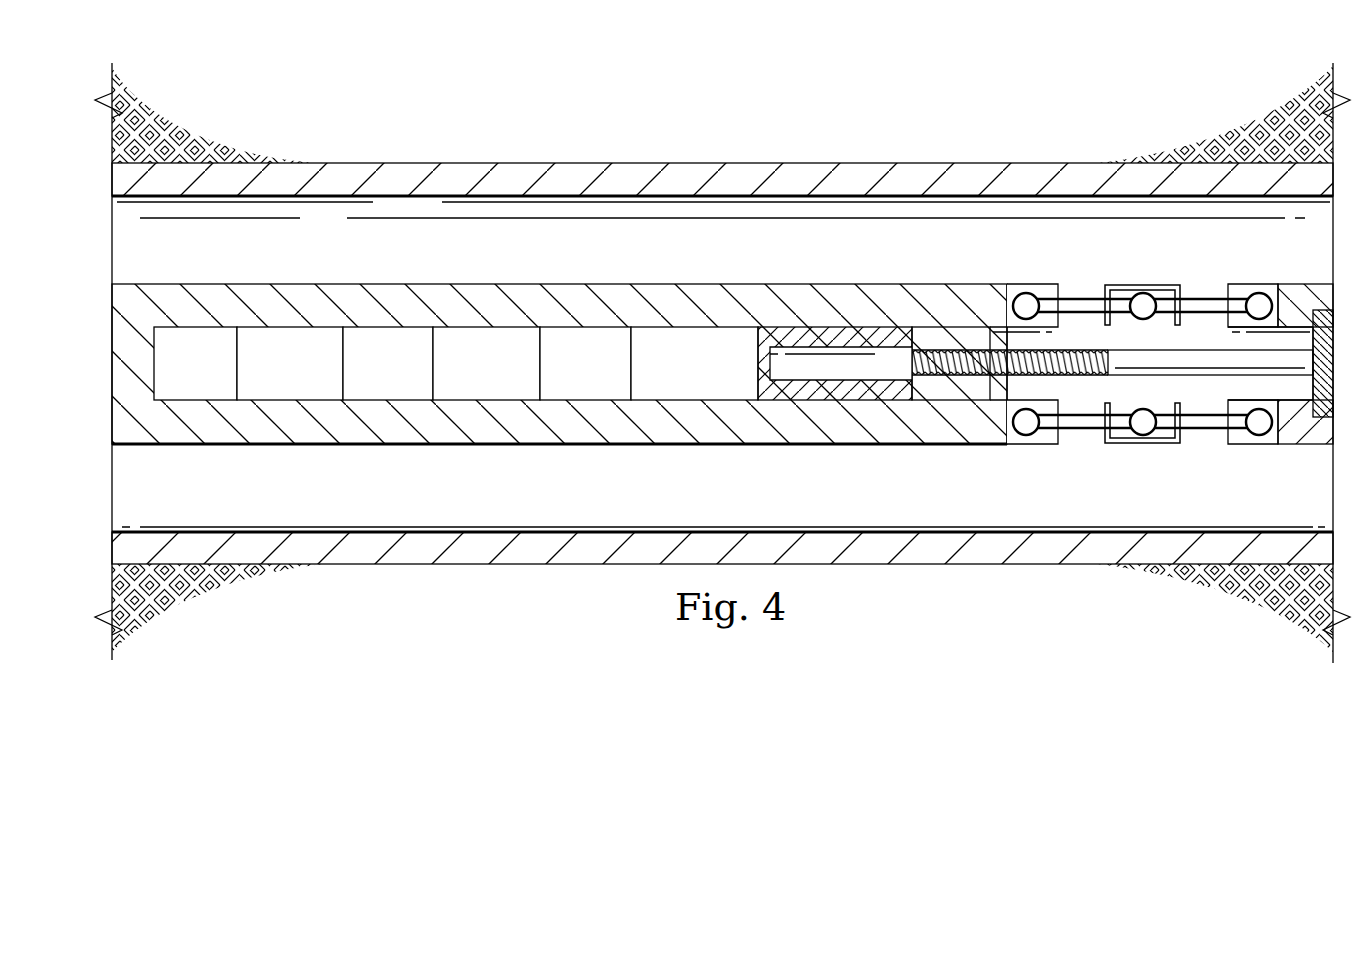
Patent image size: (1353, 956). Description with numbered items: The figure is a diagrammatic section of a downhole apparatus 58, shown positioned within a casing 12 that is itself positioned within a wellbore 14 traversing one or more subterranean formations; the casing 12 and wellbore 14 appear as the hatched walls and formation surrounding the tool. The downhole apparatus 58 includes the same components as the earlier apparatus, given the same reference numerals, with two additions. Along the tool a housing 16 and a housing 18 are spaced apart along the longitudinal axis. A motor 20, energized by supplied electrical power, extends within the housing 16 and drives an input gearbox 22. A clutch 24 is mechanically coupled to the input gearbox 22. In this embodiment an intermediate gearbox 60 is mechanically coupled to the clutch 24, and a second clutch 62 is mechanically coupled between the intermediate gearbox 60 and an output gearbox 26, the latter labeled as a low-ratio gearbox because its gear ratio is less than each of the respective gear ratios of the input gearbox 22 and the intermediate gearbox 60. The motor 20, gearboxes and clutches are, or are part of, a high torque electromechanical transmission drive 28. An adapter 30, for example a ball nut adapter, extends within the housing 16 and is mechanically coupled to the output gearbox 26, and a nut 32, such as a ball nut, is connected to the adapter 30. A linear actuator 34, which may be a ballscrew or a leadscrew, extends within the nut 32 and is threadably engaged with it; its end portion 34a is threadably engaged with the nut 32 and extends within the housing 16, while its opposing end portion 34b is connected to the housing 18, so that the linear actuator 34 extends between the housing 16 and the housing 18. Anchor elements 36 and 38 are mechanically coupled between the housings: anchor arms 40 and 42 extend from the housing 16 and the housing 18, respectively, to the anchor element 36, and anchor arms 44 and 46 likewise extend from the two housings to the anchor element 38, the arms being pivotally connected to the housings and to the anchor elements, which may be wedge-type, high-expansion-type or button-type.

The casing 12 is at (398, 188).
The wellbore 14 is at (306, 160).
The housing 16 is at (672, 445).
The housing 18 is at (1298, 370).
The motor 20 is at (224, 390).
The input gearbox 22 is at (314, 390).
The clutch 24 is at (406, 390).
The output gearbox 26 is at (728, 392).
The high torque electromechanical transmission drive 28 is at (456, 364).
The adapter 30 is at (836, 364).
The nut 32 is at (965, 393).
The linear actuator 34 is at (1150, 346).
The end portion 34a is at (912, 365).
The end portion 34b is at (1298, 350).
The anchor element 36 is at (1143, 445).
The anchor element 38 is at (1142, 283).
The anchor arm 40 is at (1079, 432).
The anchor arm 42 is at (1205, 432).
The anchor arm 44 is at (1078, 297).
The anchor arm 46 is at (1205, 297).
The downhole apparatus 58 is at (338, 280).
The intermediate gearbox 60 is at (498, 390).
The clutch 62 is at (591, 390).